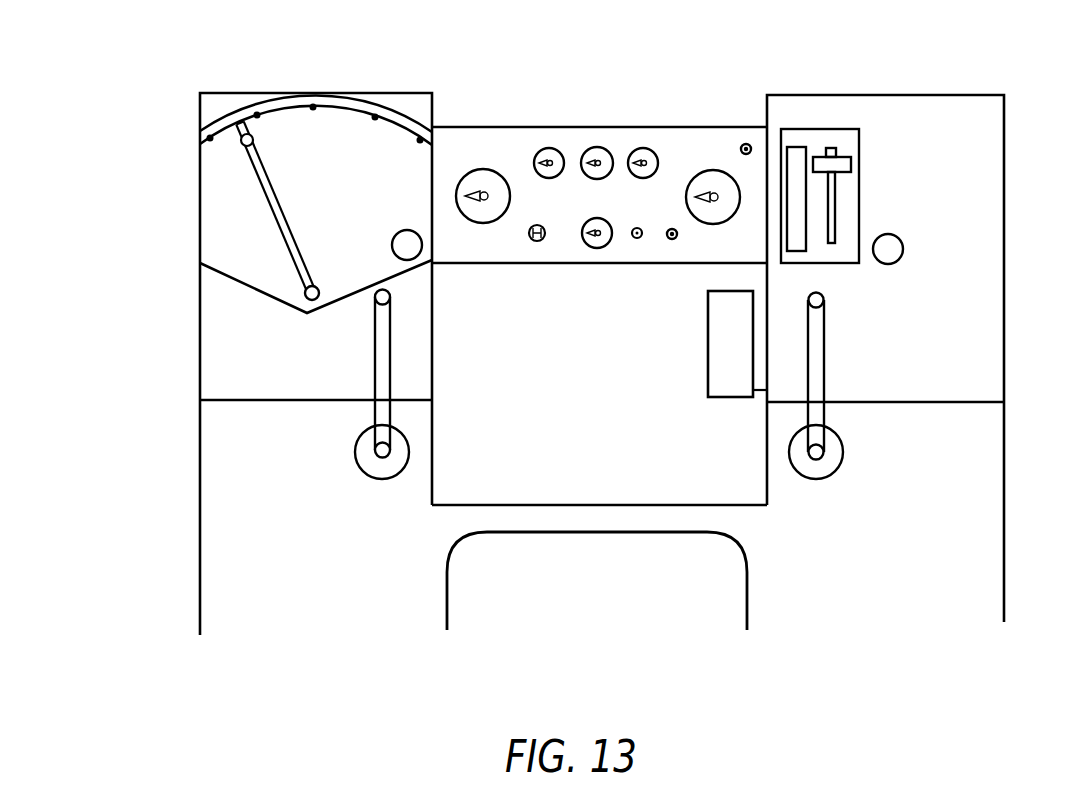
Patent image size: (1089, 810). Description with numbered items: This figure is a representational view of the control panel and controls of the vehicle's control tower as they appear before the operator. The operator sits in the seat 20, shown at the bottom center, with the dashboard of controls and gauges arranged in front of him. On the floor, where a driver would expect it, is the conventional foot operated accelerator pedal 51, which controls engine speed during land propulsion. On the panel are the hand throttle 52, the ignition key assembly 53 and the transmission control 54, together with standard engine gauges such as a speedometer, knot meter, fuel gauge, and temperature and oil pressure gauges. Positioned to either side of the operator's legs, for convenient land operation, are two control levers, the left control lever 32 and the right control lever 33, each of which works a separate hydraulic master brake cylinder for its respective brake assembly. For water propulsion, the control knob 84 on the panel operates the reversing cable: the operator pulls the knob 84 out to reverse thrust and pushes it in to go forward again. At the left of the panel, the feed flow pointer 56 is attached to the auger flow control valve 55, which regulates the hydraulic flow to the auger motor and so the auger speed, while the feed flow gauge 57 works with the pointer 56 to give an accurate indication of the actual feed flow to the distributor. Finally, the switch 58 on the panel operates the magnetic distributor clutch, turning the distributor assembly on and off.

The seat 20 is at (750, 600).
The left control lever 32 is at (374, 375).
The right control lever 33 is at (826, 340).
The accelerator pedal 51 is at (706, 358).
The hand throttle 52 is at (391, 245).
The ignition key assembly 53 is at (536, 244).
The transmission control 54 is at (843, 126).
The auger flow control valve 55 is at (303, 292).
The feed flow pointer 56 is at (258, 178).
The feed flow gauge 57 is at (210, 118).
The switch 58 is at (637, 241).
The control knob 84 is at (904, 244).